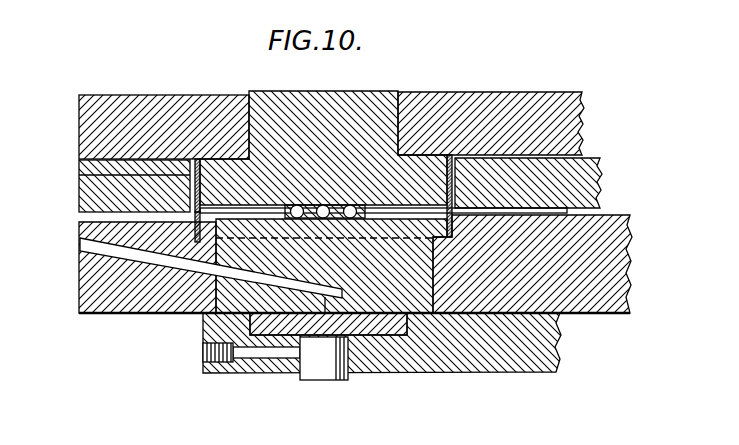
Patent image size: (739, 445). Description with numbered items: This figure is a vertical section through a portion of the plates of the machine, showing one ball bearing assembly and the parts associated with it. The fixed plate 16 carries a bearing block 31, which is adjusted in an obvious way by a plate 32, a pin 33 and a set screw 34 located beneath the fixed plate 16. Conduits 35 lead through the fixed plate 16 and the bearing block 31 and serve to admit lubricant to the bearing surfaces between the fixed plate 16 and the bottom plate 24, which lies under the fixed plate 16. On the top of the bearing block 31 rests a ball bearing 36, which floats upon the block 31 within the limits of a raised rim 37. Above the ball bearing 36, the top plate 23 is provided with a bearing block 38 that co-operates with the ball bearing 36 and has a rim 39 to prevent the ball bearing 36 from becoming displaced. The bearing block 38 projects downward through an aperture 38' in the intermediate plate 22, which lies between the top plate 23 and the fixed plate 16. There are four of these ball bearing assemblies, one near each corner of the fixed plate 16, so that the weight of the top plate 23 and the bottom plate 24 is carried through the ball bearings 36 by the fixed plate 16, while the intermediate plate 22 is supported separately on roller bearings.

The fixed plate 16 is at (605, 270).
The intermediate plate 22 is at (590, 163).
The top plate 23 is at (518, 102).
The bottom plate 24 is at (492, 362).
The bearing block 31 is at (406, 288).
The plate 32 is at (365, 333).
The pin 33 is at (317, 370).
The set screw 34 is at (226, 365).
The conduit 35 is at (107, 250).
The ball bearing 36 is at (362, 205).
The raised rim 37 is at (79, 238).
The bearing block 38 is at (323, 127).
The aperture 38' is at (345, 186).
The rim 39 is at (199, 165).